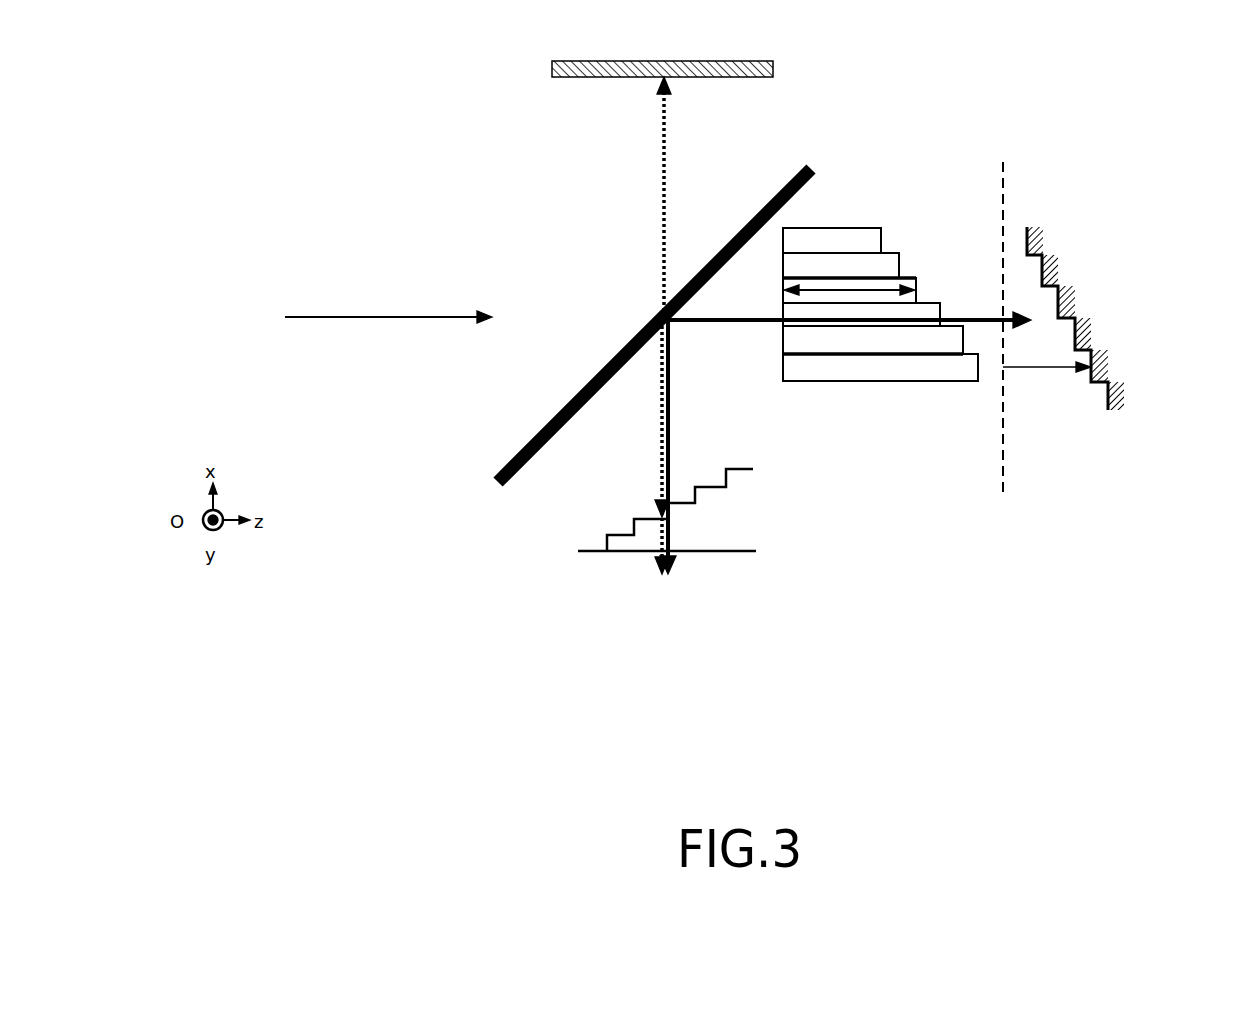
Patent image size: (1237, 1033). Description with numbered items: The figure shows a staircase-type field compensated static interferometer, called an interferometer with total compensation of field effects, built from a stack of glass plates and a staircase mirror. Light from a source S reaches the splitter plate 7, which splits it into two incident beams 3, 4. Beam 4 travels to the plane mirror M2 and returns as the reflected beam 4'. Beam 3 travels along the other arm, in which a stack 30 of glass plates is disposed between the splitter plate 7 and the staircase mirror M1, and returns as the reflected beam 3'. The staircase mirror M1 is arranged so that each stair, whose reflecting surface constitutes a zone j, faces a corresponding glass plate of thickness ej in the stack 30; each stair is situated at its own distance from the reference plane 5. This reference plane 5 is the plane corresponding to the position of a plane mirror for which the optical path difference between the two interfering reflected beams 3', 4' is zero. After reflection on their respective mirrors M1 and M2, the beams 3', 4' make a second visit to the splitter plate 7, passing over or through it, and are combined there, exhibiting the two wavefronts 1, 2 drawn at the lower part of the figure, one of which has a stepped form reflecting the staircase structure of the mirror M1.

The source S is at (371, 308).
The mirror M2 is at (775, 68).
The incident beam 4 is at (611, 198).
The reflected beam 4' is at (613, 447).
The splitter plate 7 is at (512, 453).
The incident beam 3 is at (848, 351).
The reflected beam 3' is at (703, 447).
The stack of glass plates 30 is at (872, 396).
The glass plate thickness ej is at (890, 290).
The reference plane 5 is at (1004, 187).
The staircase mirror M1 is at (1131, 397).
The wavefront 1 is at (755, 480).
The wavefront 2 is at (740, 553).